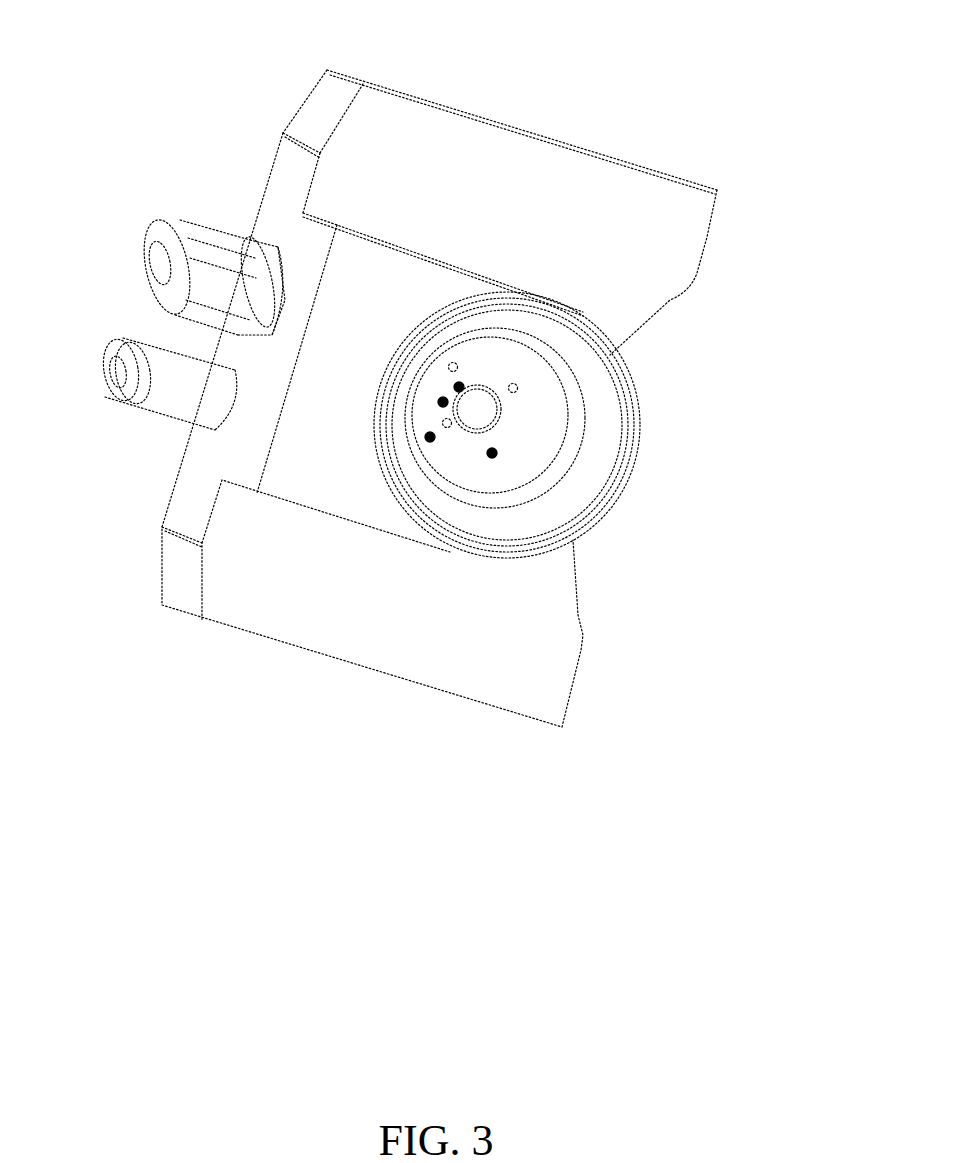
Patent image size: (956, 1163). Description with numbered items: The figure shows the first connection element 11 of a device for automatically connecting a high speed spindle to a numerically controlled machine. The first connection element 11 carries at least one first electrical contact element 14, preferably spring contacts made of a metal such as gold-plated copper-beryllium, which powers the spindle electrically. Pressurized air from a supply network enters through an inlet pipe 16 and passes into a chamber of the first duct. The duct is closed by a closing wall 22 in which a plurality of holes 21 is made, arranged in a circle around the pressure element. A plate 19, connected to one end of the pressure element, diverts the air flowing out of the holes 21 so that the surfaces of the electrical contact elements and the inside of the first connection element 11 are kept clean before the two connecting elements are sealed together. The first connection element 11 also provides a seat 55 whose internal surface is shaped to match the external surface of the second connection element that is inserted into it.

The first connection element 11 is at (655, 367).
The first electrical contact element 14 is at (430, 437).
The inlet pipe 16 is at (156, 414).
The plate 19 is at (481, 403).
The holes 21 is at (459, 387).
The closing wall 22 is at (540, 444).
The seat 55 is at (538, 492).